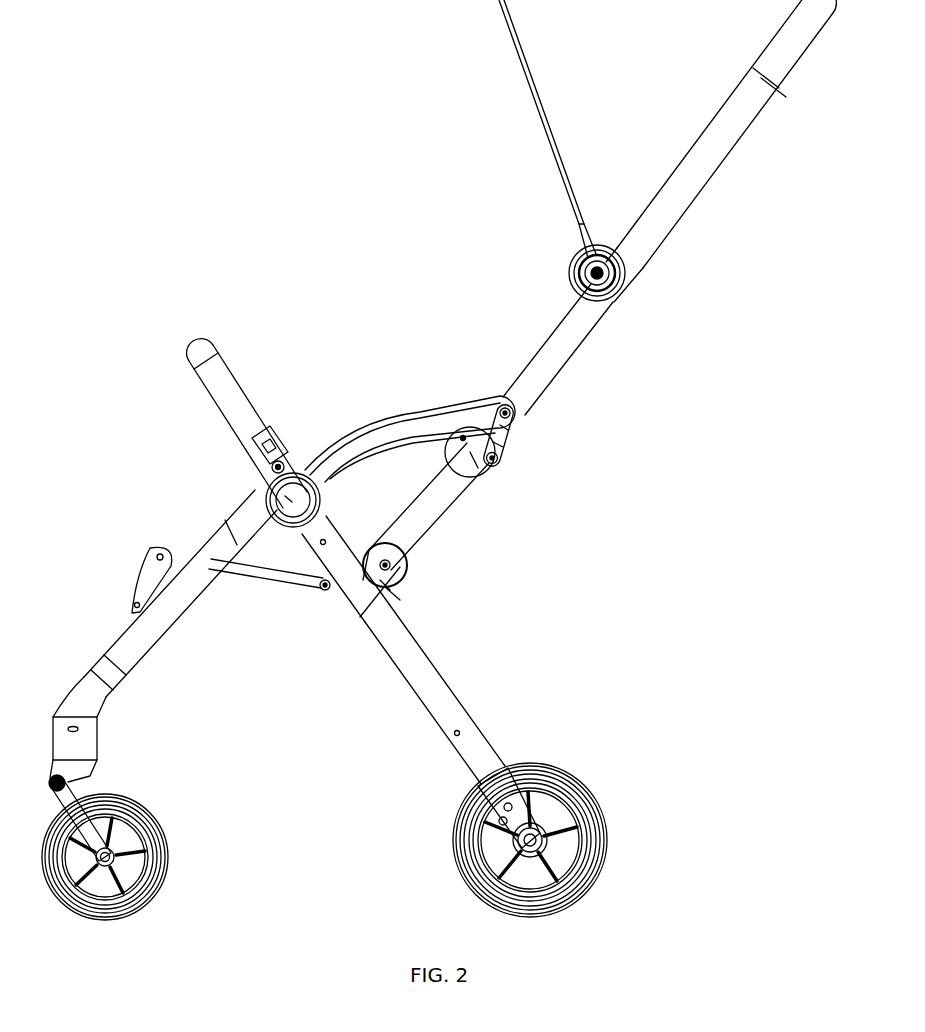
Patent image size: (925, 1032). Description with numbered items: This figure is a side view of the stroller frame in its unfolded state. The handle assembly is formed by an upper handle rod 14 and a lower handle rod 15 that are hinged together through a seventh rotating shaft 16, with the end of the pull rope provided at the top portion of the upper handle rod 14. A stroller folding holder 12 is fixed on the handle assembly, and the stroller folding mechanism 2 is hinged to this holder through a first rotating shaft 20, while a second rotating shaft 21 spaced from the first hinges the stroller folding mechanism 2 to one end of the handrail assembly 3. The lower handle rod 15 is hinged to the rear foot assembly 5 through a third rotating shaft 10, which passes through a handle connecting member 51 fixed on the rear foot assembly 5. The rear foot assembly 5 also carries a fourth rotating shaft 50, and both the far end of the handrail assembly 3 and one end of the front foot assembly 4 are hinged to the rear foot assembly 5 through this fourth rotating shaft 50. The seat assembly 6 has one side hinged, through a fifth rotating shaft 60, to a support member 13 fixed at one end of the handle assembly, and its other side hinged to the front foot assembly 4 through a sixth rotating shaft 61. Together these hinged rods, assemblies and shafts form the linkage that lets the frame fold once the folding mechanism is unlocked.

The upper handle rod 14 is at (695, 187).
The seventh rotating shaft 16 is at (632, 270).
The lower handle rod 15 is at (548, 356).
The second rotating shaft 21 is at (523, 410).
The stroller folding mechanism 2 is at (504, 448).
The first rotating shaft 20 is at (500, 459).
The stroller folding holder 12 is at (474, 466).
The handrail assembly 3 is at (340, 430).
The fourth rotating shaft 50 is at (266, 488).
The front foot assembly 4 is at (205, 537).
The sixth rotating shaft 61 is at (180, 550).
The third rotating shaft 10 is at (405, 568).
The handle connecting member 51 is at (395, 588).
The fifth rotating shaft 60 is at (320, 591).
The seat assembly 6 is at (257, 575).
The support member 13 is at (330, 592).
The rear foot assembly 5 is at (428, 695).